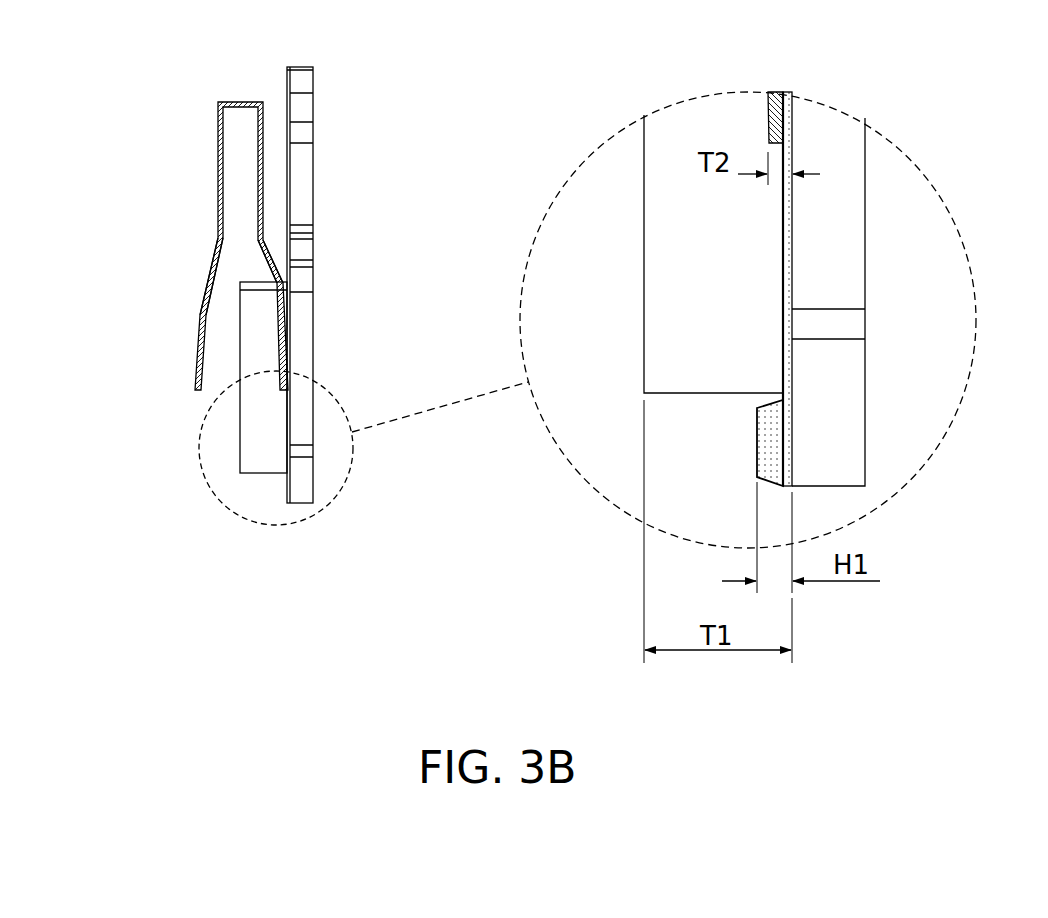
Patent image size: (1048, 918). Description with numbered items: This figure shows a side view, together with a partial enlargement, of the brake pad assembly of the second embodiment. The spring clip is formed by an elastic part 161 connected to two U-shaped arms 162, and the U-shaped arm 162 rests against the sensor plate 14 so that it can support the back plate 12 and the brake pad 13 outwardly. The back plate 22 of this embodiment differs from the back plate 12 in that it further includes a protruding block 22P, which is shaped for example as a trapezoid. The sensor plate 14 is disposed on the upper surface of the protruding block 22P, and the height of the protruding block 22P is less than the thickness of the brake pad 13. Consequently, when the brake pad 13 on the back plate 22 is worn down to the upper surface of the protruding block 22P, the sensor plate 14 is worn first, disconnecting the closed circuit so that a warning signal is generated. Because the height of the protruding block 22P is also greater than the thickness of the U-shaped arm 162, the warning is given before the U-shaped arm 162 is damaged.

The back plate 12 is at (307, 83).
The brake pad 13 is at (250, 358).
The sensor plate 14 is at (287, 77).
The elastic part 161 is at (222, 107).
The U-shaped arm 162 is at (198, 313).
The back plate 22 is at (848, 388).
The protruding block 22P is at (770, 443).